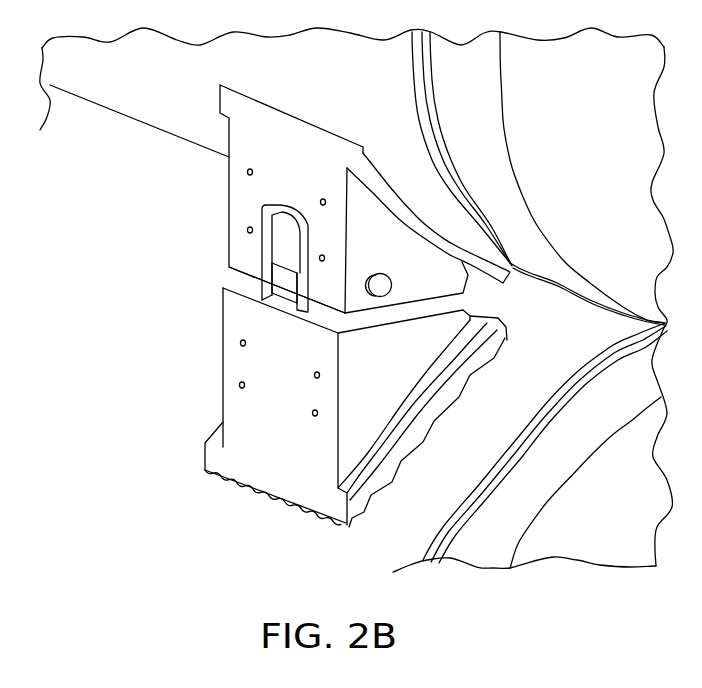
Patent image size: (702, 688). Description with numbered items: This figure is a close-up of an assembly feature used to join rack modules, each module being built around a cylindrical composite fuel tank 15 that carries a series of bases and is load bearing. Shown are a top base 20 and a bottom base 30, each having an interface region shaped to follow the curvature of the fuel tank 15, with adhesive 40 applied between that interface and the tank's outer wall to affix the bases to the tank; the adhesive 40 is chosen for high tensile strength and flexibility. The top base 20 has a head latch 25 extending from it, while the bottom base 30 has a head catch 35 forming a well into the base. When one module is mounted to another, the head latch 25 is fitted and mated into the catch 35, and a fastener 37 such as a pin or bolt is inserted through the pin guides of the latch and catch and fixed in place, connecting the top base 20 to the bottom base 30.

The cylindrical composite fuel tank 15 is at (345, 90).
The top base 20 is at (293, 394).
The head latch 25 is at (283, 283).
The bottom base 30 is at (308, 179).
The head catch 35 is at (280, 222).
The fastener 37 is at (392, 283).
The adhesive 40 is at (418, 425).